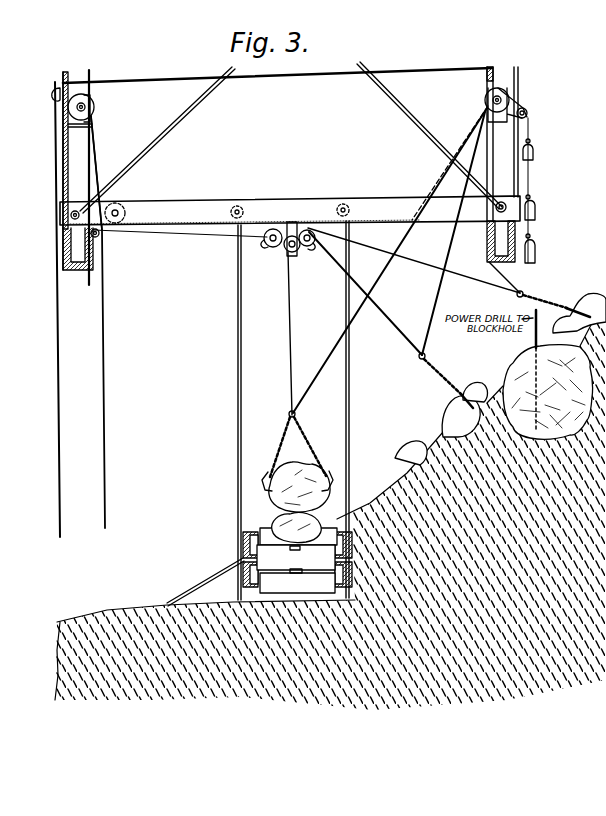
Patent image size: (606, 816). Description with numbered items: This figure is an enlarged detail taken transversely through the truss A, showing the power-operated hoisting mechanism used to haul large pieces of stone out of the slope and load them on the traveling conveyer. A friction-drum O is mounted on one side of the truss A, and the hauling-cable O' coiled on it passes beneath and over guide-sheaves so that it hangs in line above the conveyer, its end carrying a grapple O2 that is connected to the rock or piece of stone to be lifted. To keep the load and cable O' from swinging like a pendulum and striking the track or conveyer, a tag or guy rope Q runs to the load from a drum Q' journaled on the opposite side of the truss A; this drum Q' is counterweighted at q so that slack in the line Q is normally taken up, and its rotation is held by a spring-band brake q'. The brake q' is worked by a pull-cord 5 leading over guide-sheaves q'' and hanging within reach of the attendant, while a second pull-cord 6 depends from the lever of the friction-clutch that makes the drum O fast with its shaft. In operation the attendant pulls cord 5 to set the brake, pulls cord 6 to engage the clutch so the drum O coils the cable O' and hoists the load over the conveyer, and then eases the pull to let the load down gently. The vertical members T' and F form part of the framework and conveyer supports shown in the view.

The pull-cord 5 is at (446, 56).
The pull-cord 6 is at (106, 323).
The truss A is at (290, 199).
The friction-drum O is at (109, 158).
The hauling-cable O' is at (305, 265).
The grapple O2 is at (437, 373).
The tag or guy rope Q is at (390, 259).
The drum Q' is at (492, 103).
The counterweight q is at (531, 201).
The brake q' is at (528, 96).
The guide-sheaves q'' is at (43, 100).
The guide rod T' is at (250, 412).
The frame rod F is at (351, 376).